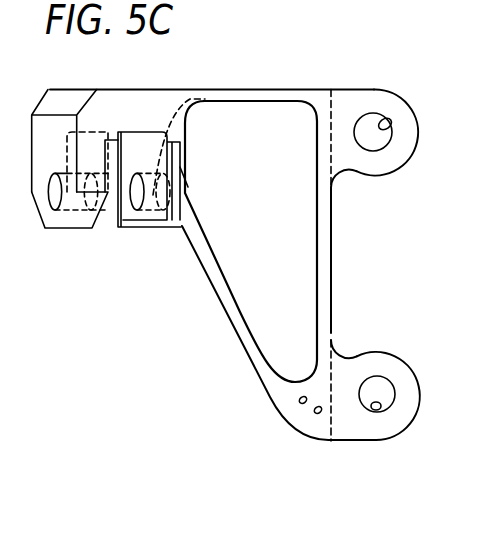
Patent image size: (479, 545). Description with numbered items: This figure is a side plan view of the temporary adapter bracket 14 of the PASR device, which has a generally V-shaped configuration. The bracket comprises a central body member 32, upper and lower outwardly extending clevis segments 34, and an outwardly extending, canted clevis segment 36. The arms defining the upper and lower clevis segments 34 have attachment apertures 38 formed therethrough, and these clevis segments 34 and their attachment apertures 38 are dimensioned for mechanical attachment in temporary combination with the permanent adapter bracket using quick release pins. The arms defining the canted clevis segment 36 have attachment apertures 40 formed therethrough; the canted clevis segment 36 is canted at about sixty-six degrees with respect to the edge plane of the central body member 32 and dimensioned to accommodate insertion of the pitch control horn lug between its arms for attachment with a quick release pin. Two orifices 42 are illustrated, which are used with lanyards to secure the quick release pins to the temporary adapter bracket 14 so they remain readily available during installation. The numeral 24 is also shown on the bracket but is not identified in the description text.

The temporary adapter bracket 14 is at (242, 263).
The upper mounting lobe 24 is at (367, 100).
The central body member 32 is at (248, 92).
The upper and lower clevis segments 34 is at (363, 365).
The canted clevis segment 36 is at (115, 108).
The attachment apertures 38 is at (393, 125).
The attachment apertures 40 is at (55, 200).
The orifices 42 is at (315, 411).